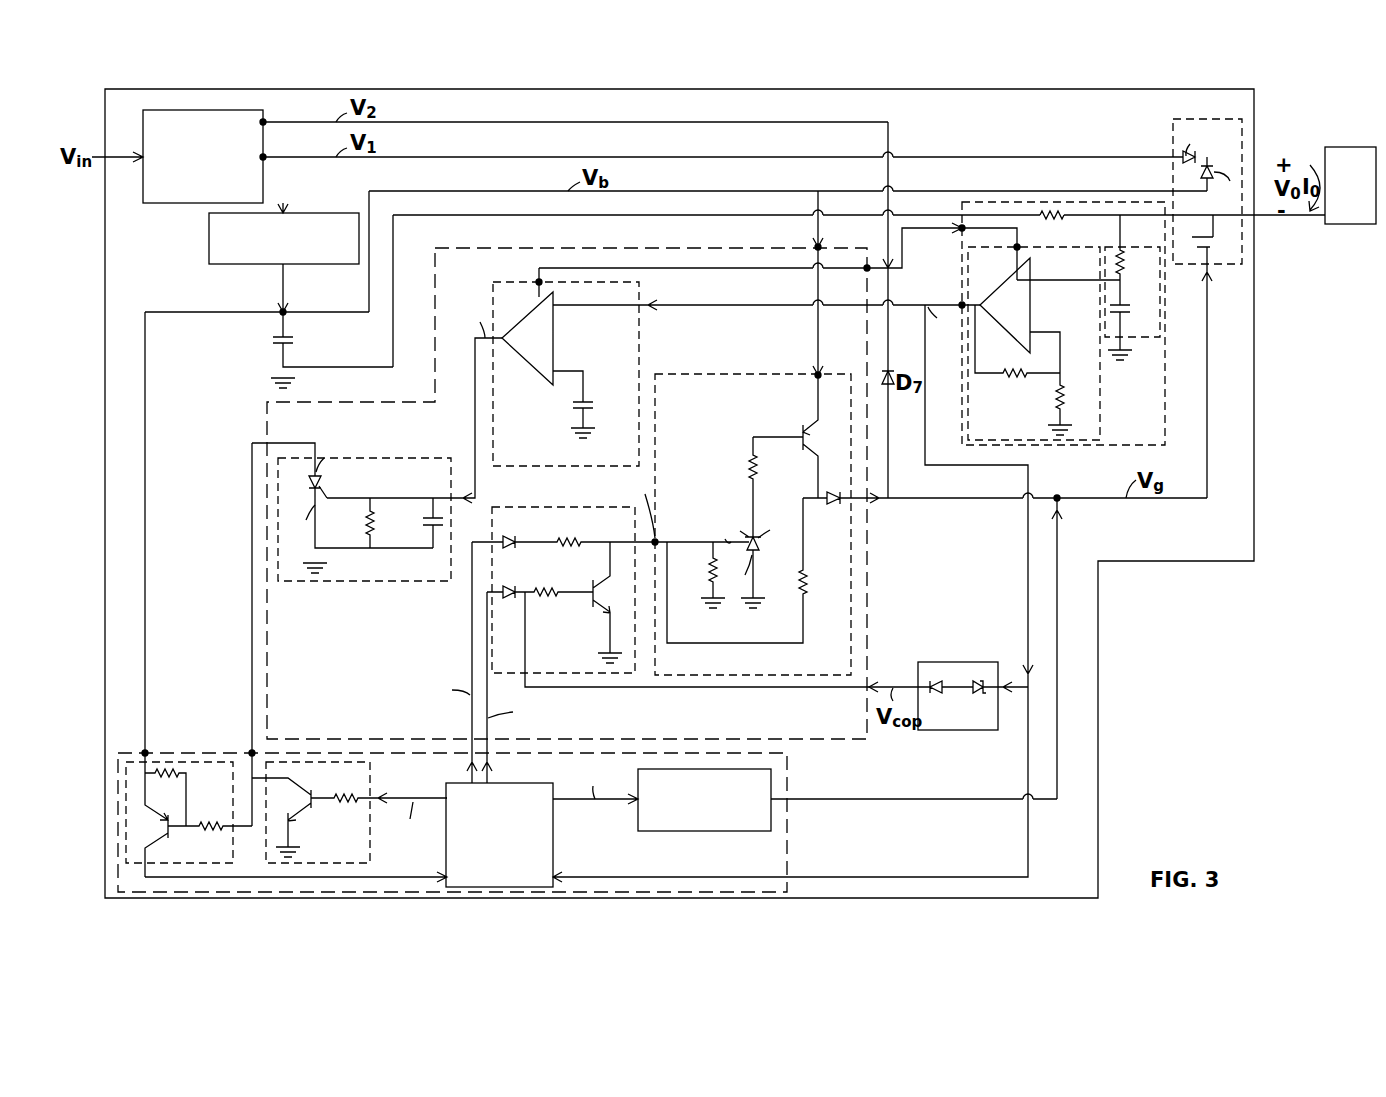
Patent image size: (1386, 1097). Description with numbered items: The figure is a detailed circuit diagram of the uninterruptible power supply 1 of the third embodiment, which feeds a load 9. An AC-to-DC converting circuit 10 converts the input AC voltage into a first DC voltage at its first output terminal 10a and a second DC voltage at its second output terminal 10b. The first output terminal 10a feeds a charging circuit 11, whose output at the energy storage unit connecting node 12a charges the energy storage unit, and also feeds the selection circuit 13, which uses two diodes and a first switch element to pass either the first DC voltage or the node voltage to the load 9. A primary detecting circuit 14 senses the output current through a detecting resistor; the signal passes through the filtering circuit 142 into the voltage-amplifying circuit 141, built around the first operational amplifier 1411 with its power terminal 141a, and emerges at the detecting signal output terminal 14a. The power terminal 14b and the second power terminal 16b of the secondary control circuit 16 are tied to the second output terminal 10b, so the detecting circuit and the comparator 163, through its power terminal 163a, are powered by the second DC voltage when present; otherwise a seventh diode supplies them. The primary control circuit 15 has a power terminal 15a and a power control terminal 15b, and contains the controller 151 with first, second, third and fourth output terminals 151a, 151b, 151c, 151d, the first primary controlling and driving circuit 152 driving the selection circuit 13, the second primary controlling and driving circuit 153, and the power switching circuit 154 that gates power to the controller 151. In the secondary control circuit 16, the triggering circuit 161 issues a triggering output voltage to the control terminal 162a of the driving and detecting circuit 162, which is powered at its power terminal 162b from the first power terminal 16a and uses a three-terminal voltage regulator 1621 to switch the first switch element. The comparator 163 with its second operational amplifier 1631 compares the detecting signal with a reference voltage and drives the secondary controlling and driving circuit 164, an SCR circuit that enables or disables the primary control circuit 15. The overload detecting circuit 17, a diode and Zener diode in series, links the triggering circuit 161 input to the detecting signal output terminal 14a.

The uninterruptible power supply 1 is at (1256, 430).
The load 9 is at (1346, 147).
The AC-to-DC converting circuit 10 is at (190, 177).
The first output terminal 10a is at (265, 156).
The second output terminal 10b is at (265, 121).
The charging circuit 11 is at (318, 213).
The energy storage unit connecting node 12a is at (280, 310).
The selection circuit 13 is at (1243, 246).
The primary detecting circuit 14 is at (1165, 396).
The detecting signal output terminal 14a is at (960, 305).
The power terminal of the primary detecting circuit 14b is at (960, 229).
The voltage-amplifying circuit 141 is at (1066, 342).
The power terminal of the voltage-amplifying circuit 141a is at (1020, 249).
The first operational amplifier 1411 is at (1032, 306).
The filtering circuit 142 is at (1162, 312).
The primary control circuit 15 is at (788, 853).
The power terminal of the primary control circuit 15a is at (145, 750).
The power control terminal of the primary control circuit 15b is at (251, 750).
The controller 151 is at (555, 863).
The first output terminal of the controller 151a is at (470, 781).
The second output terminal of the controller 151b is at (490, 783).
The third output terminal of the controller 151c is at (445, 798).
The fourth output terminal of the controller 151d is at (554, 801).
The first primary controlling and driving circuit 152 is at (705, 832).
The second primary controlling and driving circuit 153 is at (371, 863).
The power switching circuit 154 is at (183, 762).
The secondary control circuit 16 is at (266, 606).
The first power terminal of the secondary control circuit 16a is at (815, 245).
The second power terminal of the secondary control circuit 16b is at (867, 265).
The triggering circuit 161 is at (573, 674).
The driving and detecting circuit 162 is at (770, 485).
The control terminal of the driving and detecting circuit 162a is at (680, 520).
The power terminal of the driving and detecting circuit 162b is at (815, 372).
The three-terminal voltage regulator 1621 is at (750, 533).
The comparator 163 is at (492, 315).
The power terminal of the comparator 163a is at (537, 280).
The second operational amplifier 1631 is at (556, 338).
The secondary controlling and driving circuit 164 is at (368, 582).
The overload detecting circuit 17 is at (958, 662).